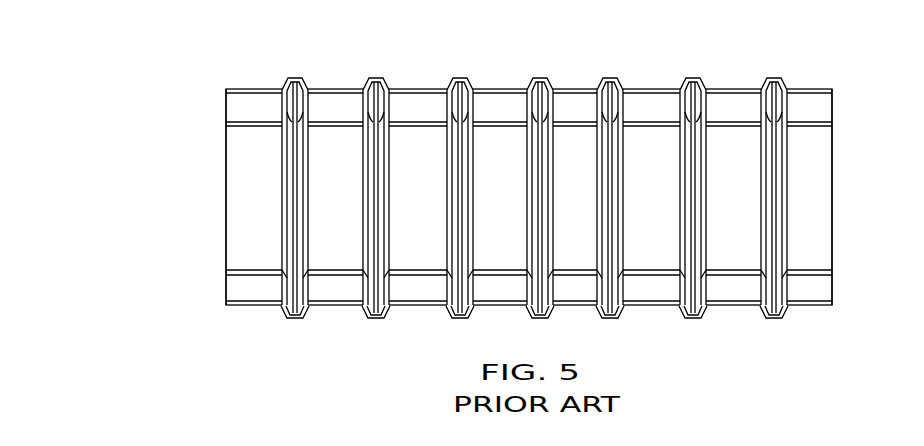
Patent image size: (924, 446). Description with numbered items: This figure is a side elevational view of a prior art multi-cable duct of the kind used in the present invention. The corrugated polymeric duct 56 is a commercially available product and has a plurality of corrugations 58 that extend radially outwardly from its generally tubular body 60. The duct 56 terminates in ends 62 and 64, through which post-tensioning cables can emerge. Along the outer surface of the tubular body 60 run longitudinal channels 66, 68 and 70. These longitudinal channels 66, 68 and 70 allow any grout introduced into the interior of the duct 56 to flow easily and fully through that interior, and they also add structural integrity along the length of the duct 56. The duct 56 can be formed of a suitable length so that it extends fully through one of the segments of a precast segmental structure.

The corrugated polymeric duct 56 is at (530, 199).
The corrugations 58 is at (464, 79).
The tubular body 60 is at (417, 290).
The end 62 is at (833, 181).
The end 64 is at (223, 196).
The longitudinal channel 66 is at (413, 128).
The longitudinal channel 68 is at (402, 272).
The longitudinal channel 70 is at (575, 86).